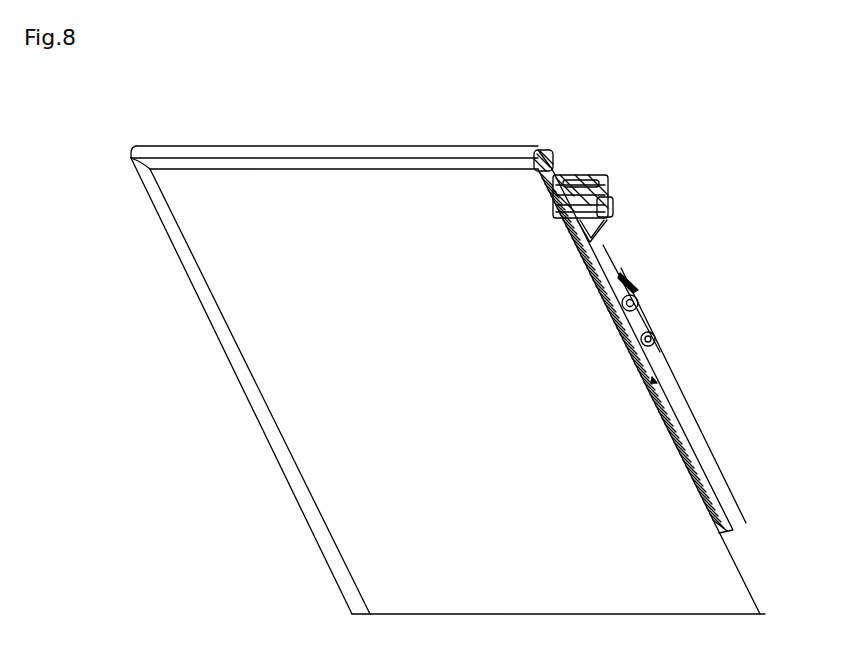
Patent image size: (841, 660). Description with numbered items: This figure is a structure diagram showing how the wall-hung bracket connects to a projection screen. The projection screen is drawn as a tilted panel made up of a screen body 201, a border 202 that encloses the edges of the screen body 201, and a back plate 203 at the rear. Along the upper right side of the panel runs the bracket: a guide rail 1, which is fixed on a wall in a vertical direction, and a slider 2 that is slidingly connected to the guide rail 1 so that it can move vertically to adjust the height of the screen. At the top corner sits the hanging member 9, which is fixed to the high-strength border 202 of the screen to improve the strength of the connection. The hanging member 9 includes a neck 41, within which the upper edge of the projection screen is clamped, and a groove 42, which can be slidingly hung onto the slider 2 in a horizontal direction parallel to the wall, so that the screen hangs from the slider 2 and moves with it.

The guide rail 1 is at (682, 408).
The slider 2 is at (608, 268).
The hanging member 9 is at (553, 83).
The neck 41 is at (540, 148).
The groove 42 is at (608, 213).
The screen body 201 is at (497, 188).
The border 202 is at (382, 160).
The back plate 203 is at (729, 598).